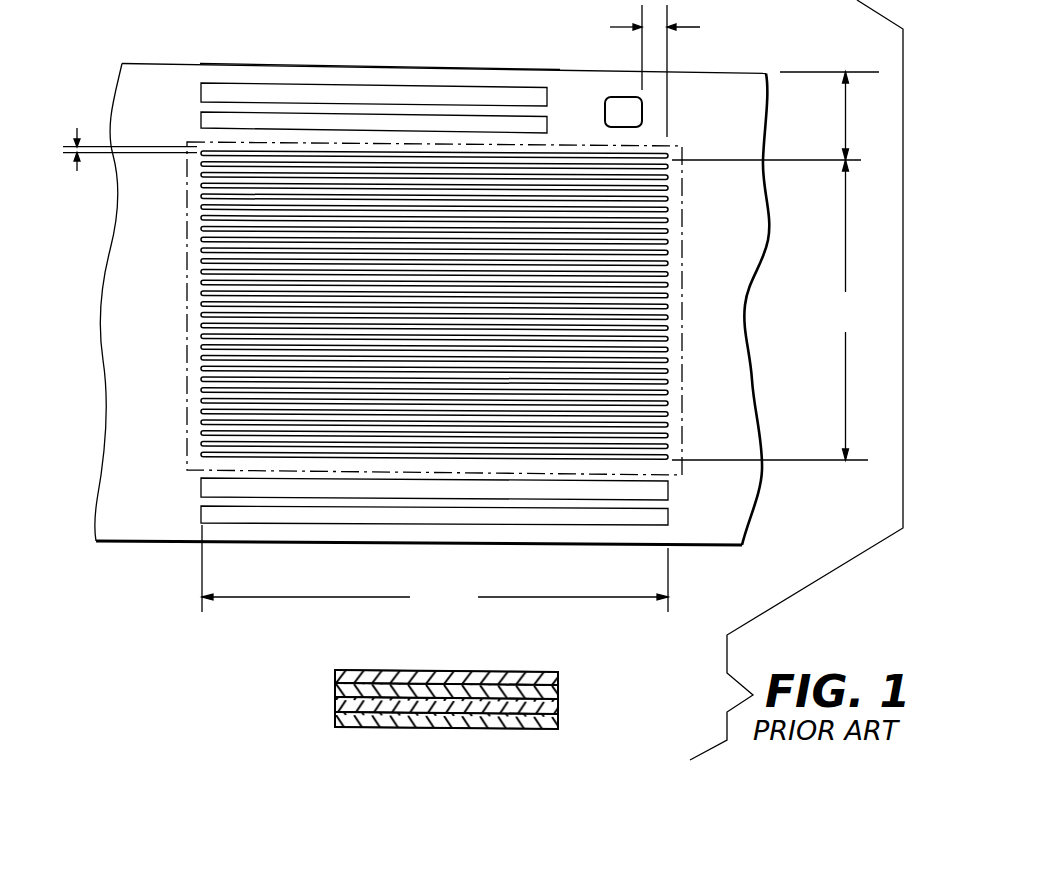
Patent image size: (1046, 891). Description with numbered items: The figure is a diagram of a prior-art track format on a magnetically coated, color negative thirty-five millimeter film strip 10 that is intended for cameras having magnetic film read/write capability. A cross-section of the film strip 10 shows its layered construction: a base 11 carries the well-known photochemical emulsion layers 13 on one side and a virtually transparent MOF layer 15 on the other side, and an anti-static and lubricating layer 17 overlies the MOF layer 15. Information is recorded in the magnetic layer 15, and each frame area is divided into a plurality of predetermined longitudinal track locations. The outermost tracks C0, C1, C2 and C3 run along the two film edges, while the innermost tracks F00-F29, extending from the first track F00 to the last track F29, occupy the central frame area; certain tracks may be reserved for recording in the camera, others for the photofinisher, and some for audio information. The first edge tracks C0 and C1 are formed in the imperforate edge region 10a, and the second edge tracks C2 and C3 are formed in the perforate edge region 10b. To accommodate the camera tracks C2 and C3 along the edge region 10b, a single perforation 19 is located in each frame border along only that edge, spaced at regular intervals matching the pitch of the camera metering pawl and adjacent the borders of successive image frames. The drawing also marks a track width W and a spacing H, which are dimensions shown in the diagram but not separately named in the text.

The film strip 10 is at (767, 66).
The imperforate edge region 10a is at (435, 568).
The perforate edge region 10b is at (560, 85).
The base 11 is at (337, 700).
The photochemical emulsion layers 13 is at (556, 716).
The MOF layer 15 is at (554, 689).
The anti-static and lubricating layer 17 is at (336, 672).
The perforation 19 is at (606, 100).
The first edge track C0 is at (296, 488).
The first edge track C1 is at (365, 514).
The second edge track C2 is at (265, 118).
The second edge track C3 is at (345, 93).
The innermost track F00 is at (671, 153).
The innermost track F29 is at (671, 457).
The innermost tracks F00-F29 is at (540, 266).
The spacing dimension H is at (665, 71).
The link width dimension W is at (117, 149).